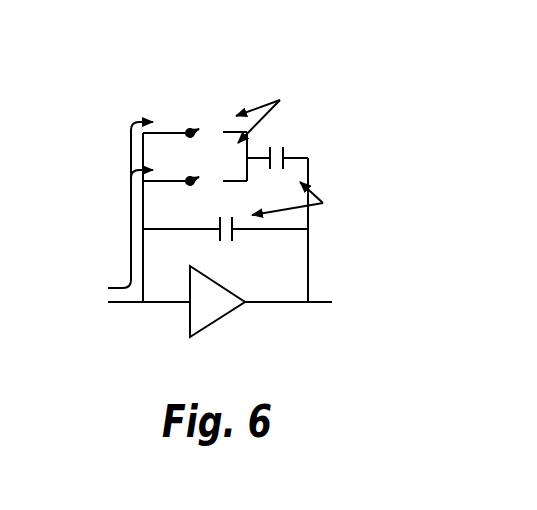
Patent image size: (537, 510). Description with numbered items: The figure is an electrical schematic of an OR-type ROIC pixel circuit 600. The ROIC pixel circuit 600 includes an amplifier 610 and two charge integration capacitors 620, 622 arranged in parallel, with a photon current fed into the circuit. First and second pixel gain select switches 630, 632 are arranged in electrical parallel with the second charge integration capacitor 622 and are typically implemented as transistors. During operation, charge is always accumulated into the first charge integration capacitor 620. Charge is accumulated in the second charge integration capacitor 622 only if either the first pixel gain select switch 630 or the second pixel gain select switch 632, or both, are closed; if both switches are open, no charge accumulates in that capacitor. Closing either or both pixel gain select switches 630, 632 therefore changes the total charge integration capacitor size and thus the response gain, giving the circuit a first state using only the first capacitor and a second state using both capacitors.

The ROIC pixel circuit 600 is at (80, 55).
The amplifier 610 is at (218, 305).
The first charge integration capacitor 620 is at (228, 245).
The second charge integration capacitor 622 is at (281, 143).
The first pixel gain select switch 630 is at (203, 182).
The second pixel gain select switch 632 is at (200, 122).